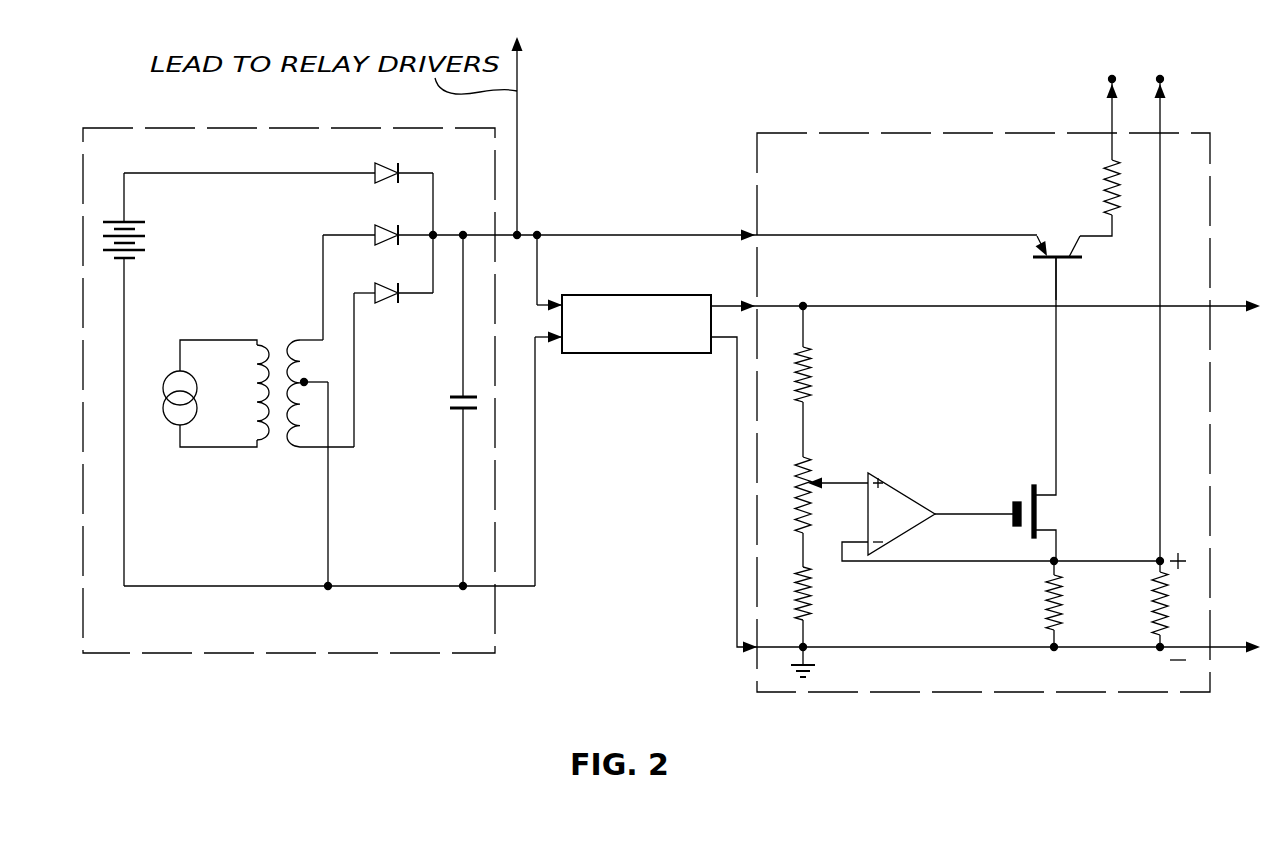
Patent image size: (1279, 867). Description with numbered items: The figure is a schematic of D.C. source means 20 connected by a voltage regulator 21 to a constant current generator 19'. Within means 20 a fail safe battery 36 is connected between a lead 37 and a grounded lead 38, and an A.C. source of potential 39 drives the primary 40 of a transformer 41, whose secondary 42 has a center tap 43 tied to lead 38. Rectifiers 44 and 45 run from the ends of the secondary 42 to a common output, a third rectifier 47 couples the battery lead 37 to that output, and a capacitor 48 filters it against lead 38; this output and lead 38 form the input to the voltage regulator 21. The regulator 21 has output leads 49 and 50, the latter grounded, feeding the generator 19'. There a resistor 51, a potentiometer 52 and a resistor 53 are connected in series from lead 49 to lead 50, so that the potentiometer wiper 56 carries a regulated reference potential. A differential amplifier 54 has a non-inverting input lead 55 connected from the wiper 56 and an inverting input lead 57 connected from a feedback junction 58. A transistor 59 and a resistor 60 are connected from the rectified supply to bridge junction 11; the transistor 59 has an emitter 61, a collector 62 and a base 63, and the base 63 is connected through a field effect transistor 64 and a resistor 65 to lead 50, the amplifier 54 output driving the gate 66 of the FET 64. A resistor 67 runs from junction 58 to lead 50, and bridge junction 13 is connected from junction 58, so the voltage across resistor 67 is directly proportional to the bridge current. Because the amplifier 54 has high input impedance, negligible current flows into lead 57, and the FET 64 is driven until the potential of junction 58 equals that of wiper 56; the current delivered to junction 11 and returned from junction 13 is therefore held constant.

The bridge junction 11 is at (1108, 80).
The bridge junction 13 is at (1165, 85).
The constant current generator 19' is at (983, 435).
The D.C. source means 20 is at (283, 660).
The voltage regulator 21 is at (610, 295).
The fail safe battery 36 is at (150, 242).
The lead 37 is at (235, 173).
The lead 38 is at (208, 586).
The A.C. source of potential 39 is at (167, 388).
The primary 40 is at (248, 368).
The transformer 41 is at (262, 452).
The secondary 42 is at (300, 362).
The center tap 43 is at (310, 378).
The rectifier 44 is at (378, 278).
The rectifier 45 is at (378, 218).
The third rectifier 47 is at (378, 160).
The capacitor 48 is at (455, 410).
The output lead 49 is at (978, 282).
The output lead 50 is at (737, 396).
The resistor 51 is at (812, 375).
The potentiometer 52 is at (822, 462).
The resistor 53 is at (812, 603).
The differential amplifier 54 is at (918, 488).
The non-inverting input lead 55 is at (838, 483).
The potentiometer wiper 56 is at (830, 486).
The inverting input lead 57 is at (856, 542).
The feedback junction 58 is at (1156, 558).
The transistor 59 is at (1060, 210).
The resistor 60 is at (1104, 178).
The emitter 61 is at (1032, 250).
The collector 62 is at (1088, 250).
The base 63 is at (1052, 268).
The field effect transistor 64 is at (1010, 538).
The resistor 65 is at (1045, 604).
The gate 66 is at (998, 508).
The resistor 67 is at (1152, 604).